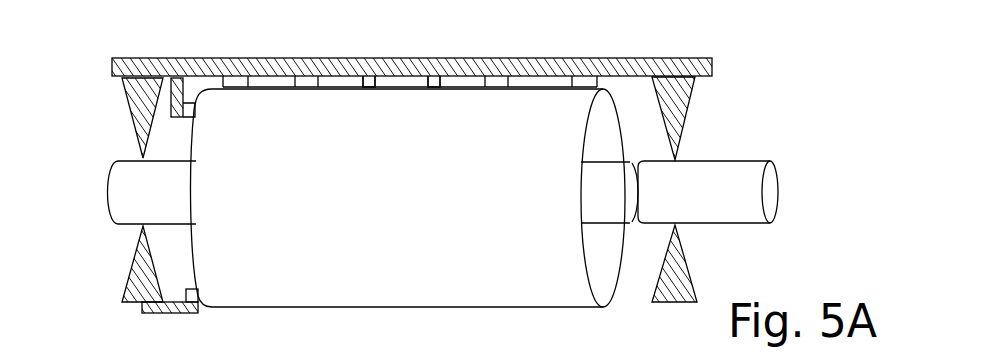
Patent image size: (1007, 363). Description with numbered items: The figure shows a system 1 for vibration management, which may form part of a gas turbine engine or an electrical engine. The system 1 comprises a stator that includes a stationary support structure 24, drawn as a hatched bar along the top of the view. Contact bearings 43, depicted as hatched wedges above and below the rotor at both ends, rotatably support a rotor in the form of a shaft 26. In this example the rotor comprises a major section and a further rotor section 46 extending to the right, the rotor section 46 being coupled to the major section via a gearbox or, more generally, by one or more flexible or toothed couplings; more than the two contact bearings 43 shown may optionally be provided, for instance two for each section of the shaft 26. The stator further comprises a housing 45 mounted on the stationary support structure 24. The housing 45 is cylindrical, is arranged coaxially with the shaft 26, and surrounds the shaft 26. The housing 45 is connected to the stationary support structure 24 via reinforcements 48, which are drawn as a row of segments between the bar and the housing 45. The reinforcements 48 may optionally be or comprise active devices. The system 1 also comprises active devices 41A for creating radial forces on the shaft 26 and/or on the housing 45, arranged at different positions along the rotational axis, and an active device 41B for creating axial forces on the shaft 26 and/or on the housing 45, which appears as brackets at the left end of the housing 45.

The system for vibration management 1 is at (88, 91).
The stationary support structure 24 is at (640, 58).
The shaft 26 is at (123, 189).
The active devices for creating radial forces 41A is at (437, 83).
The active device for creating axial forces 41B is at (193, 108).
The contact bearings 43 is at (118, 109).
The housing 45 is at (290, 107).
The rotor section 46 is at (738, 200).
The reinforcements 48 is at (231, 83).